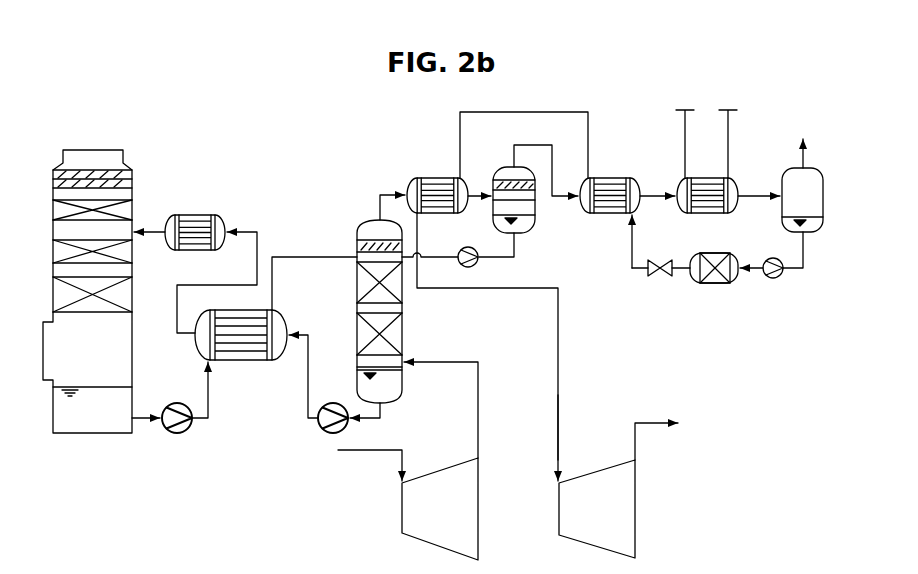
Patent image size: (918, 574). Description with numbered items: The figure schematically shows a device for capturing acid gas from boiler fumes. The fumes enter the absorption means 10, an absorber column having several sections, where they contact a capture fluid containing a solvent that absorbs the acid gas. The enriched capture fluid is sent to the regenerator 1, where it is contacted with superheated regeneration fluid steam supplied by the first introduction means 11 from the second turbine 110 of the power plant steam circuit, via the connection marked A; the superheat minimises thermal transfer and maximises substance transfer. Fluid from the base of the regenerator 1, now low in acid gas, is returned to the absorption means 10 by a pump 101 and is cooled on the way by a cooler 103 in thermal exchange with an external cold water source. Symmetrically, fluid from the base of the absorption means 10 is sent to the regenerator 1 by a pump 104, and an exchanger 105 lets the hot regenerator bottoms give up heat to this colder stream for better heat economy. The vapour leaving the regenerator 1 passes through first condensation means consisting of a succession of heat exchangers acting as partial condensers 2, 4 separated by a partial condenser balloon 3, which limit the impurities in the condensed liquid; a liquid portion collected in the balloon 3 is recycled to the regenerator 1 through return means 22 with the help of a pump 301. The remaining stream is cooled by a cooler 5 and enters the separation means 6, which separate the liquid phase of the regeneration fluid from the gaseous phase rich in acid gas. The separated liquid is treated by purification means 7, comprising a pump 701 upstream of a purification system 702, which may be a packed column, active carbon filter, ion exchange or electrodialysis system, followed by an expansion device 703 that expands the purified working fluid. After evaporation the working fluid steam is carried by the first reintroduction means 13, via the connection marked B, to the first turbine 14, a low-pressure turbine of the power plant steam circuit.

The regenerator 1 is at (406, 381).
The partial condenser 2 is at (432, 176).
The partial condenser balloon 3 is at (499, 166).
The partial condenser 4 is at (608, 176).
The cooler 5 is at (695, 176).
The separation means 6 is at (780, 176).
The purification means 7 is at (700, 286).
The absorption means 10 is at (137, 322).
The first introduction means 11 is at (479, 413).
The first reintroduction means 13 is at (560, 412).
The first turbine 14 is at (639, 508).
The return means 22 is at (520, 248).
The pump 101 is at (333, 401).
The cooler 103 is at (195, 212).
The pump 104 is at (177, 401).
The exchanger 105 is at (240, 362).
The second turbine 110 is at (482, 508).
The pump 301 is at (479, 264).
The pump 701 is at (775, 280).
The purification system 702 is at (716, 286).
The expansion device 703 is at (656, 277).